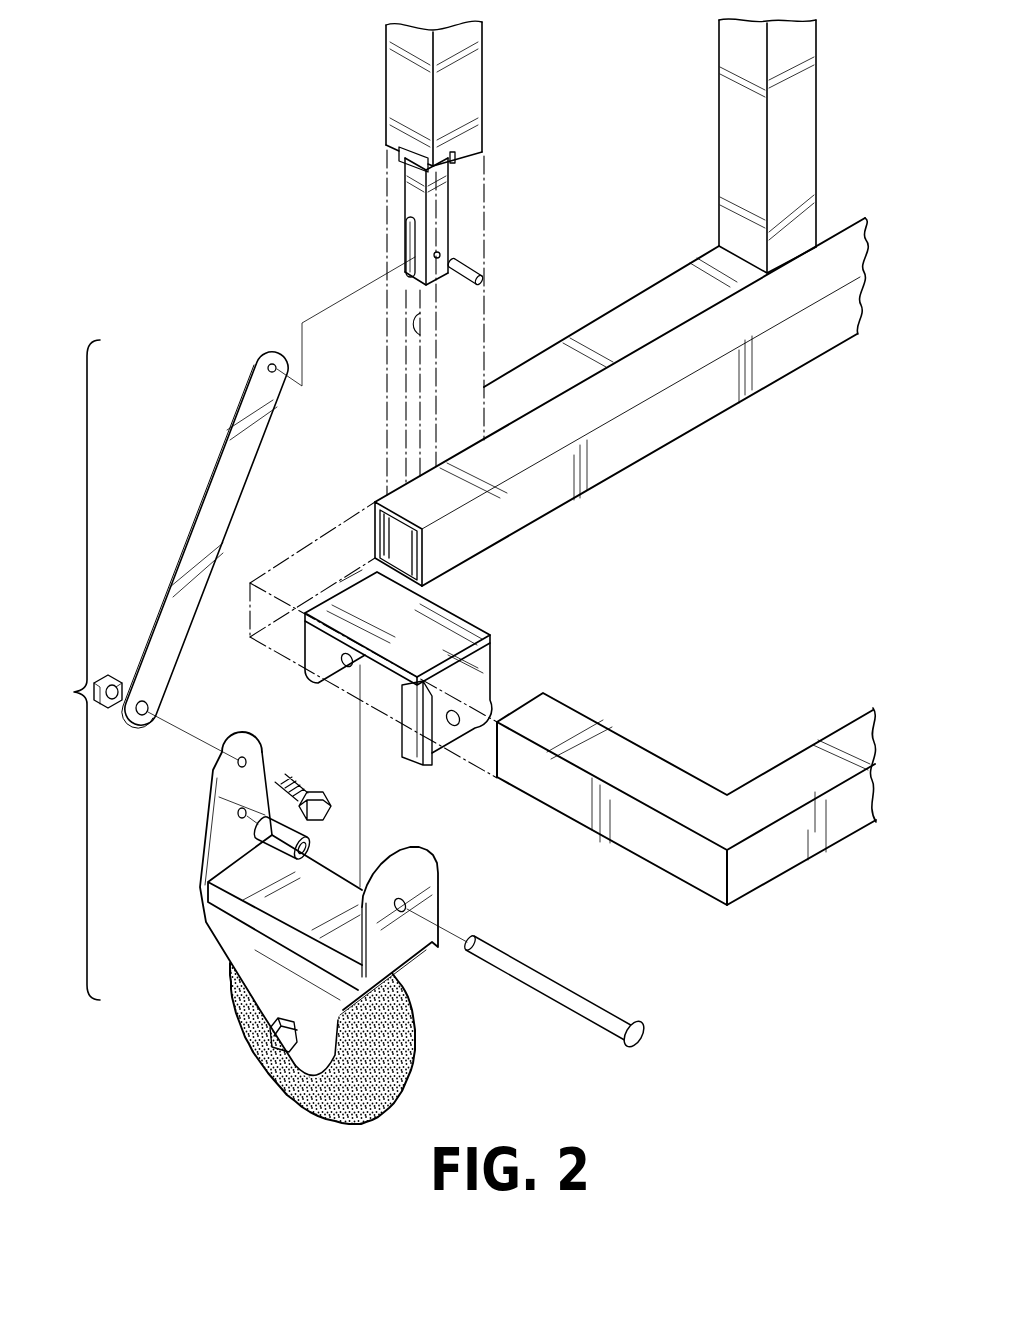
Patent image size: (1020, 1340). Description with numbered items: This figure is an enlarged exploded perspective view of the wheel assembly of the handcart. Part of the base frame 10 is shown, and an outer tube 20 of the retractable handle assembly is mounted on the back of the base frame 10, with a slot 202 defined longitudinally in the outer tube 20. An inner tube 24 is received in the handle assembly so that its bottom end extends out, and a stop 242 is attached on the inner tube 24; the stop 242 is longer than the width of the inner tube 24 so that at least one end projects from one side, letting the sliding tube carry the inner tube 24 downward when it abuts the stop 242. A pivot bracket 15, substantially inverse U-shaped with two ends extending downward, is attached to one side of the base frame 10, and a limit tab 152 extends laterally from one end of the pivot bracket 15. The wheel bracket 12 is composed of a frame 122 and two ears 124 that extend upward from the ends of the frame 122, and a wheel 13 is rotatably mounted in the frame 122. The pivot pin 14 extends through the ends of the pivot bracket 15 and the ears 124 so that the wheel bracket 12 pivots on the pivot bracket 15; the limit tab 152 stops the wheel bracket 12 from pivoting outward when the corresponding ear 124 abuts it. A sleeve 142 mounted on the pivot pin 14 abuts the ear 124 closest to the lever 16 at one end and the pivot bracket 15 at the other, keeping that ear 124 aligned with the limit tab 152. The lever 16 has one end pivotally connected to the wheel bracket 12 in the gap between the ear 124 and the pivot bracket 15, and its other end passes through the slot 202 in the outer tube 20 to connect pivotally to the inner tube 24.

The base frame 10 is at (848, 242).
The outer tube 20 is at (468, 60).
The slot 202 is at (420, 335).
The inner tube 24 is at (408, 197).
The stop 242 is at (414, 156).
The lever 16 is at (220, 477).
The pivot bracket 15 is at (518, 633).
The limit tab 152 is at (412, 750).
The wheel bracket 12 is at (319, 928).
The frame 122 is at (225, 912).
The ear 124 is at (440, 878).
The sleeve 142 is at (257, 831).
The wheel 13 is at (390, 1071).
The pivot pin 14 is at (562, 985).